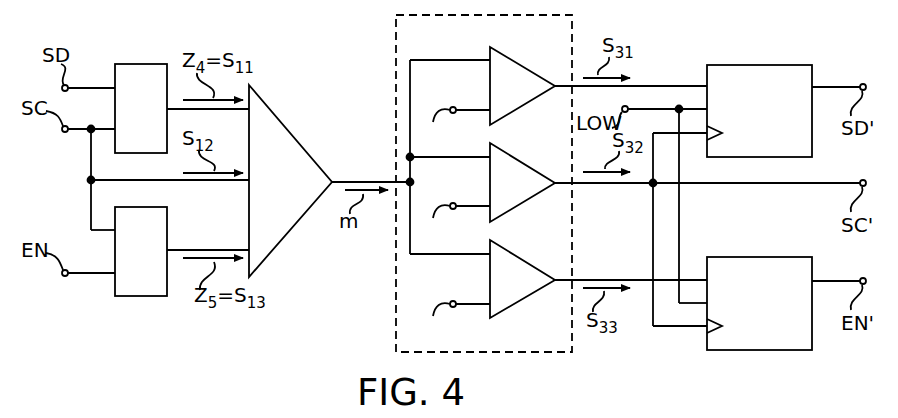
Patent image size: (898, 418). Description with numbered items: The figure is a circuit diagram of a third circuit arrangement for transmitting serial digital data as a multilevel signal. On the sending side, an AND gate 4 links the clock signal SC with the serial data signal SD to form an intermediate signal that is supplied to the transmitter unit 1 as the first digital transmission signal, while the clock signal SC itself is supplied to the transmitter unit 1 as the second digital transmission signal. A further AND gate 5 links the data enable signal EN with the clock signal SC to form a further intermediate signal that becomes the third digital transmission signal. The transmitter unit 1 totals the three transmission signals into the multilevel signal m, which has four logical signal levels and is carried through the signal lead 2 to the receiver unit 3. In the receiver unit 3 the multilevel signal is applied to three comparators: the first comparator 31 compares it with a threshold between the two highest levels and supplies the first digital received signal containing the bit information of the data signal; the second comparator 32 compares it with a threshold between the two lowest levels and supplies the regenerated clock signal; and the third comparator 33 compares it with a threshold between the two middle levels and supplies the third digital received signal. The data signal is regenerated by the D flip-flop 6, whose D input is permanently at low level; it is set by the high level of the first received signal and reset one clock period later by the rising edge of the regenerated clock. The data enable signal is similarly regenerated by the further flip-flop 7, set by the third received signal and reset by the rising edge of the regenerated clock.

The transmitter unit 1 is at (281, 122).
The signal lead 2 is at (344, 180).
The receiver unit 3 is at (461, 183).
The AND gate 4 is at (135, 64).
The further AND gate 5 is at (140, 296).
The D flip-flop 6 is at (744, 64).
The further flip-flop 7 is at (744, 257).
The first comparator 31 is at (532, 102).
The second comparator 32 is at (532, 199).
The third comparator 33 is at (532, 297).